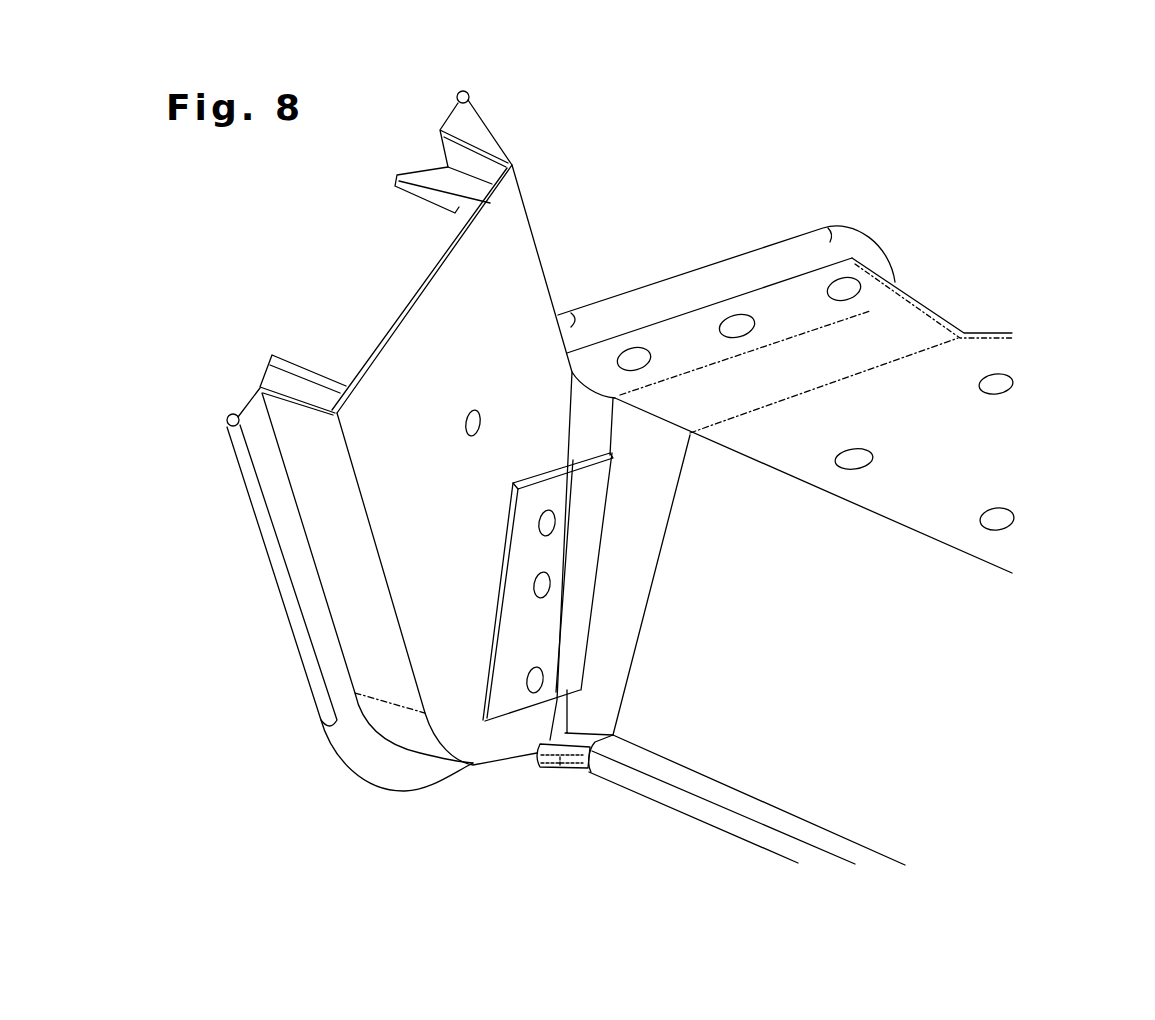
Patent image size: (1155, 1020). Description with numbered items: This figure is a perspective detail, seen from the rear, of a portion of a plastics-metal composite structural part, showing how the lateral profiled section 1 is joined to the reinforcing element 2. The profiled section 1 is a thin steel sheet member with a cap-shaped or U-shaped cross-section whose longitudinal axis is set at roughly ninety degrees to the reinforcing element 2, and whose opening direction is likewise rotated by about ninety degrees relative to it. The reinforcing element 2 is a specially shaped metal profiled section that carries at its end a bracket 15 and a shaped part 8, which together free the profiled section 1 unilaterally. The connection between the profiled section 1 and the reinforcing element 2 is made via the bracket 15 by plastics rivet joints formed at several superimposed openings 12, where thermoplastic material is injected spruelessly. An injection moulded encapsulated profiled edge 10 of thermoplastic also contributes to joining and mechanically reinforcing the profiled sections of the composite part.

The profiled section 1 is at (412, 427).
The reinforcing element 2 is at (927, 410).
The shaped part 8 is at (870, 343).
The injection moulded encapsulated profiled edge 10 is at (762, 258).
The openings 12 is at (540, 528).
The bracket 15 is at (525, 650).